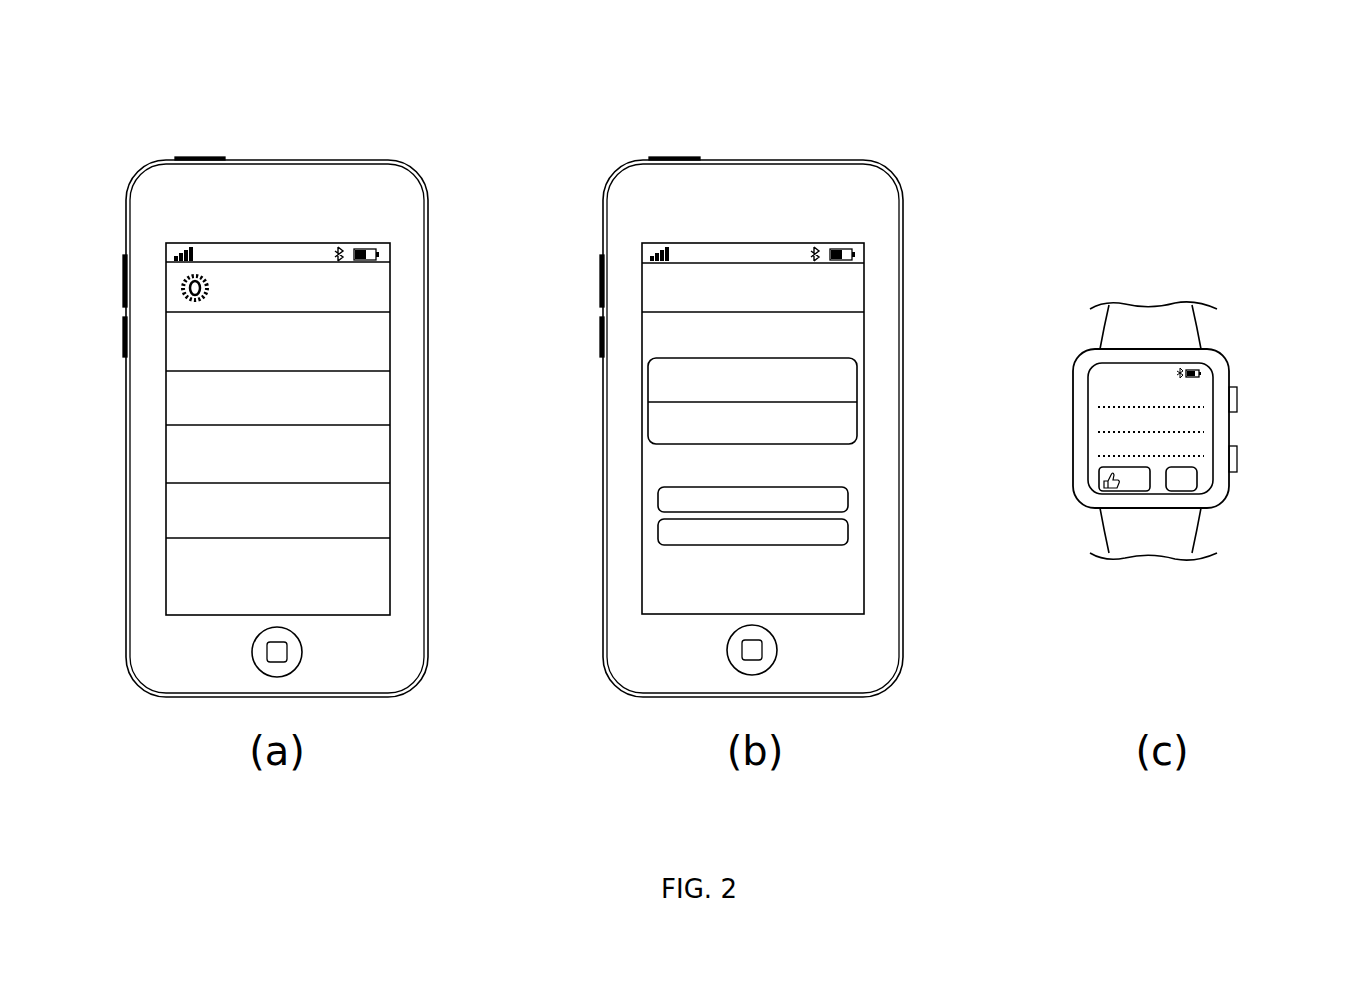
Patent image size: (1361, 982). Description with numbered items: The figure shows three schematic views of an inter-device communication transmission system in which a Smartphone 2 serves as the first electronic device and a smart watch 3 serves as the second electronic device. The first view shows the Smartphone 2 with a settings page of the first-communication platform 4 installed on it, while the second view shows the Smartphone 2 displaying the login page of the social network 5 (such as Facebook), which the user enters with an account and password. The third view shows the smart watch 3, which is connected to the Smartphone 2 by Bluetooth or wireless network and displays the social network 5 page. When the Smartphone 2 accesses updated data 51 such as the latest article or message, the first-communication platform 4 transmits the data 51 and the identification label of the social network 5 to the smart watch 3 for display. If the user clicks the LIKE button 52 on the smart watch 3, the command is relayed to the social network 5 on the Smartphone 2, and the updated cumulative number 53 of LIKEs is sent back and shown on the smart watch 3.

The Smartphone 2 is at (80, 75).
The smart watch 3 is at (1009, 194).
The first-communication platform 4 is at (200, 583).
The social network 5 is at (677, 583).
The updated data 51 is at (1128, 390).
The LIKE button 52 is at (1195, 477).
The cumulative number of the LIKE 53 is at (1102, 468).